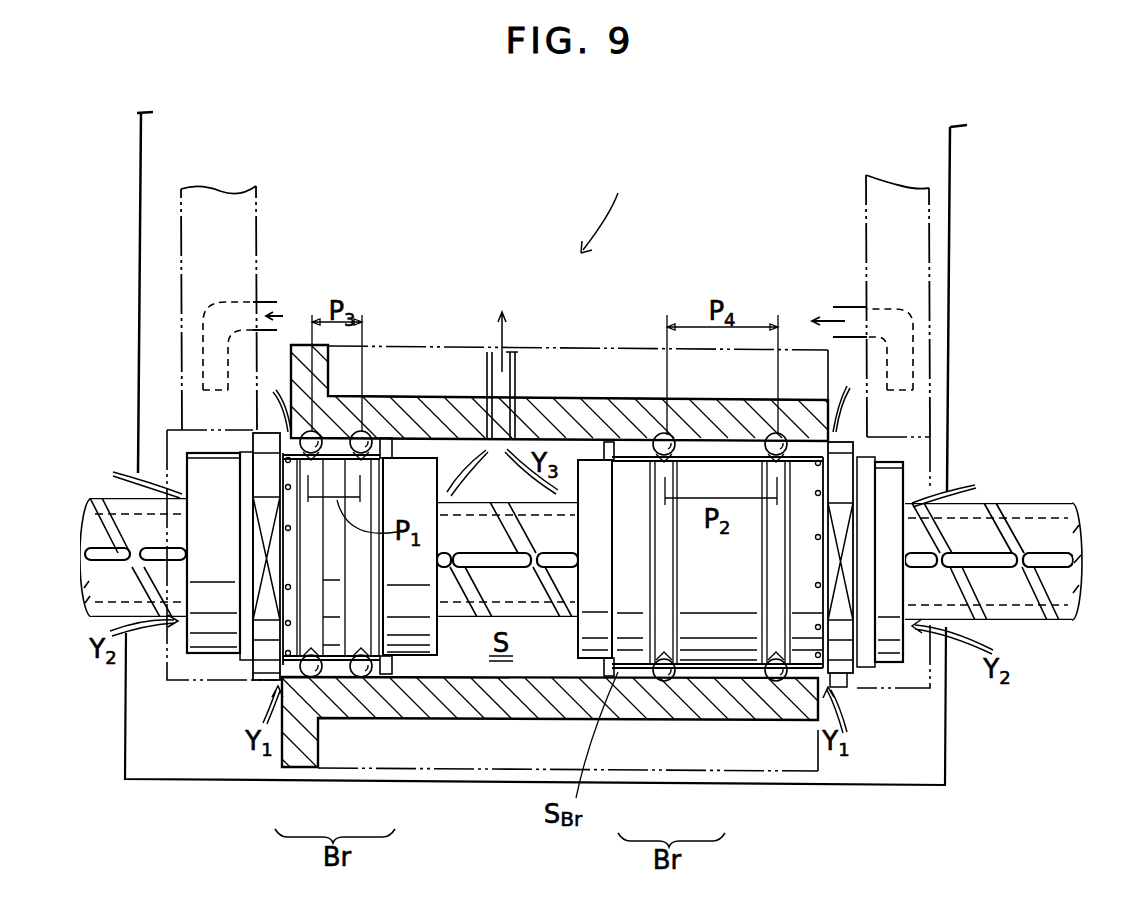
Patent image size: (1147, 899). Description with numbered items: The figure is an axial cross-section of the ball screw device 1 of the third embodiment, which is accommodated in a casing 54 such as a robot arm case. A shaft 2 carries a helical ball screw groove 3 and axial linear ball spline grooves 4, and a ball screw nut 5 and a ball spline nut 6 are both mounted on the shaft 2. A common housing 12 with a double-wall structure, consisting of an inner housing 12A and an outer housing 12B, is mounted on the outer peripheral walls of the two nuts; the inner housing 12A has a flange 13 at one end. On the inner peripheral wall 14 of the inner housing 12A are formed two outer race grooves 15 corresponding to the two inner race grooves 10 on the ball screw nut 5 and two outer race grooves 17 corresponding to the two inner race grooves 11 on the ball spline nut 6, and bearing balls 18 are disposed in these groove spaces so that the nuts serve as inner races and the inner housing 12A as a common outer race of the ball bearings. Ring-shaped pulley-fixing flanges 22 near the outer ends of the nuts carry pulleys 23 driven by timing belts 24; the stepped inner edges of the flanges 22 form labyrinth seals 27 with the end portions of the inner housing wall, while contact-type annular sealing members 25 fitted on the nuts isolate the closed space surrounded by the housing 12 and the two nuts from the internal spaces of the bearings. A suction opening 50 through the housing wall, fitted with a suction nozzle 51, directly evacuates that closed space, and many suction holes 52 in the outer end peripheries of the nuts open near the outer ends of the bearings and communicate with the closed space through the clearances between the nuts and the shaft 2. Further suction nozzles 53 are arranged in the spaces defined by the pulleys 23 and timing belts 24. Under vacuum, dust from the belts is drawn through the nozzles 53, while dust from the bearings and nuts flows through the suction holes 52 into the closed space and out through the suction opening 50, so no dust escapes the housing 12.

The ball screw device 1 is at (607, 186).
The shaft 2 is at (1022, 622).
The helical ball screw groove 3 is at (997, 507).
The ball spline groove 4 is at (1062, 562).
The ball screw nut 5 is at (381, 497).
The ball spline nut 6 is at (732, 655).
The inner race grooves 10 is at (340, 657).
The inner race grooves 11 is at (655, 655).
The housing 12 is at (700, 281).
The inner housing 12A is at (566, 400).
The outer housing 12B is at (638, 380).
The flange 13 is at (310, 417).
The inner peripheral wall 14 is at (438, 437).
The outer race grooves 15 is at (365, 666).
The outer race grooves 17 is at (645, 672).
The bearing balls 18 is at (390, 658).
The pulley-fixing flange 22 is at (262, 682).
The pulley 23 is at (176, 680).
The timing belt 24 is at (190, 317).
The contact-type annular sealing member 25 is at (387, 662).
The labyrinth seal 27 is at (290, 432).
The suction opening 50 is at (495, 413).
The suction nozzle 51 is at (512, 352).
The suction holes 52 is at (287, 487).
The suction nozzle 53 is at (263, 302).
The casing 54 is at (960, 168).